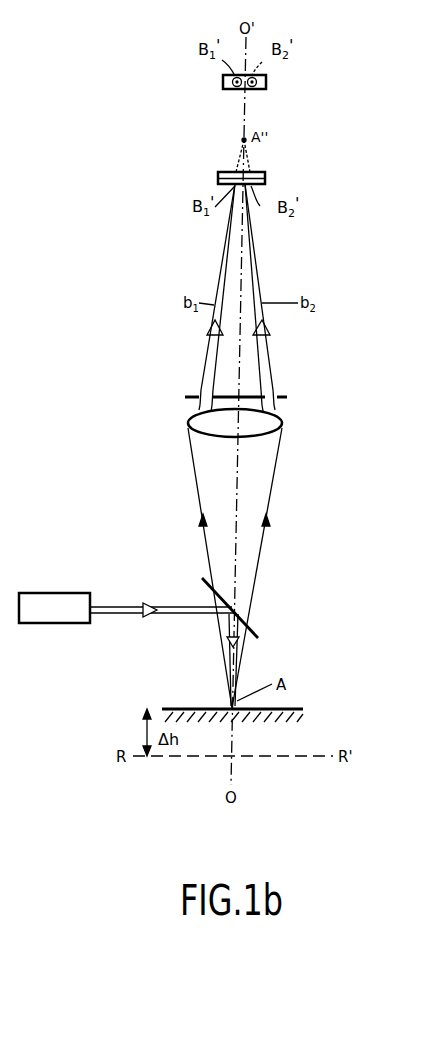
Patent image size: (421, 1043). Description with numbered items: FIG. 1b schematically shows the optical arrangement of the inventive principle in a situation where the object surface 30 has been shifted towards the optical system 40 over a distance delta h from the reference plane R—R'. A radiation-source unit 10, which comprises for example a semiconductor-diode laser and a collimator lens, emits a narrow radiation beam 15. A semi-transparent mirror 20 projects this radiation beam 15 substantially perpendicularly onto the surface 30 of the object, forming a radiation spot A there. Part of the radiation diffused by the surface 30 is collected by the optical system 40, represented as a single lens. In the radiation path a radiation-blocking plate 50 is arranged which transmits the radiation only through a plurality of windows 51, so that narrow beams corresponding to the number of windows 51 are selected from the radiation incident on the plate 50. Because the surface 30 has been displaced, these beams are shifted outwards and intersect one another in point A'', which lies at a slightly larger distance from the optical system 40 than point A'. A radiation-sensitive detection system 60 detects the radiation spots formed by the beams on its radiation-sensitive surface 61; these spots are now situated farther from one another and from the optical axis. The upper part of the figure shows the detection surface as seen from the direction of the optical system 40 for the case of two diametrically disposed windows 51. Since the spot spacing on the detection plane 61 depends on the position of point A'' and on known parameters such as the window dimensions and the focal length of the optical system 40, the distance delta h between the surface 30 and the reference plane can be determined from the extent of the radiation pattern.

The radiation-source unit 10 is at (70, 620).
The radiation beam 15 is at (172, 613).
The semi-transparent mirror 20 is at (258, 633).
The surface 30 is at (296, 712).
The optical system 40 is at (271, 420).
The radiation-blocking plate 50 is at (283, 397).
The windows 51 is at (271, 395).
The radiation-sensitive detection system 60 is at (282, 95).
The radiation-sensitive surface 61 is at (258, 186).